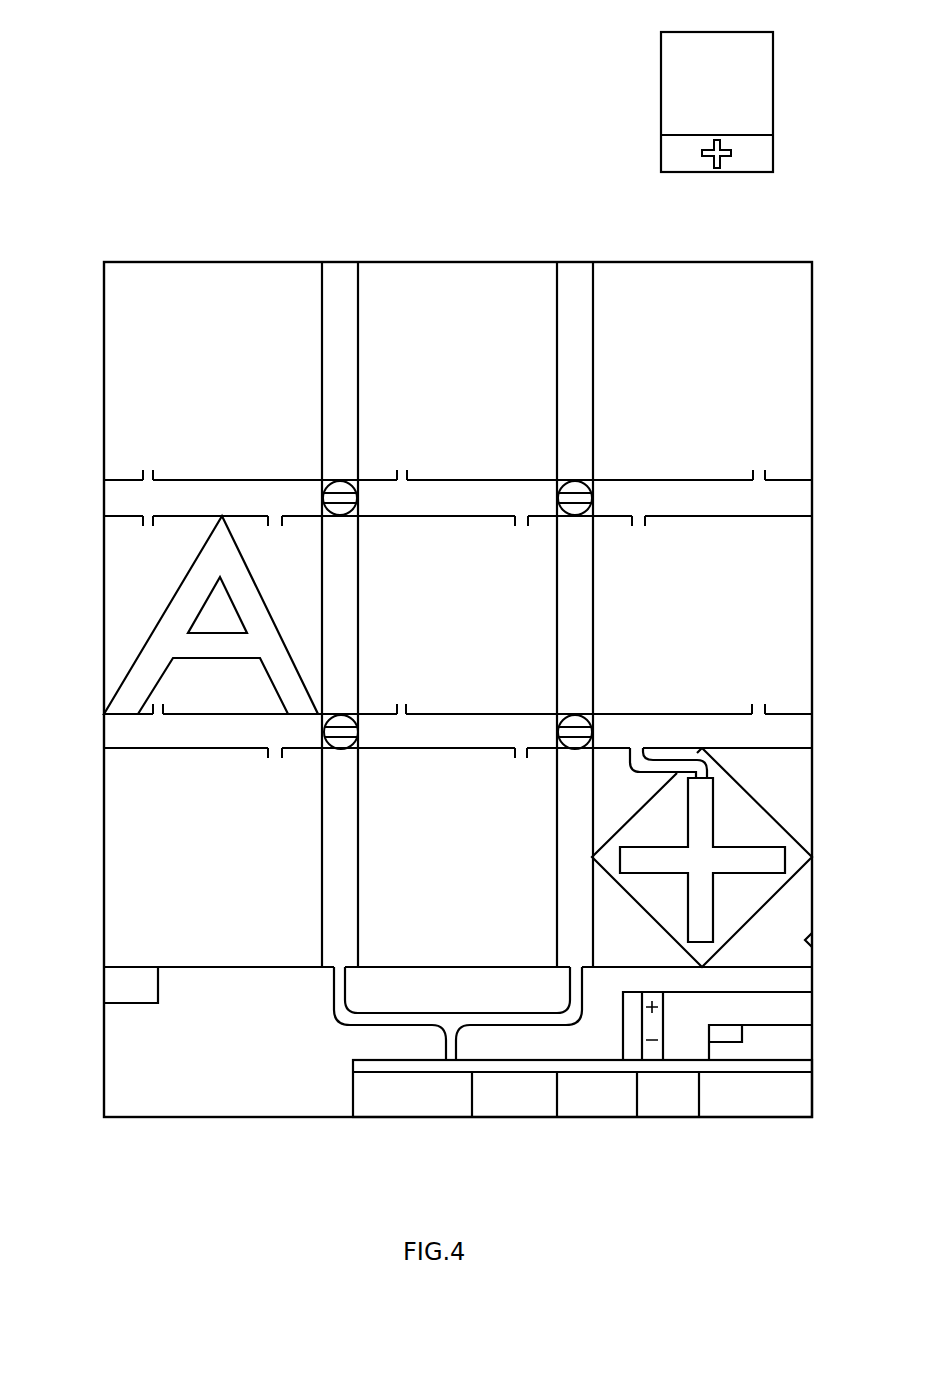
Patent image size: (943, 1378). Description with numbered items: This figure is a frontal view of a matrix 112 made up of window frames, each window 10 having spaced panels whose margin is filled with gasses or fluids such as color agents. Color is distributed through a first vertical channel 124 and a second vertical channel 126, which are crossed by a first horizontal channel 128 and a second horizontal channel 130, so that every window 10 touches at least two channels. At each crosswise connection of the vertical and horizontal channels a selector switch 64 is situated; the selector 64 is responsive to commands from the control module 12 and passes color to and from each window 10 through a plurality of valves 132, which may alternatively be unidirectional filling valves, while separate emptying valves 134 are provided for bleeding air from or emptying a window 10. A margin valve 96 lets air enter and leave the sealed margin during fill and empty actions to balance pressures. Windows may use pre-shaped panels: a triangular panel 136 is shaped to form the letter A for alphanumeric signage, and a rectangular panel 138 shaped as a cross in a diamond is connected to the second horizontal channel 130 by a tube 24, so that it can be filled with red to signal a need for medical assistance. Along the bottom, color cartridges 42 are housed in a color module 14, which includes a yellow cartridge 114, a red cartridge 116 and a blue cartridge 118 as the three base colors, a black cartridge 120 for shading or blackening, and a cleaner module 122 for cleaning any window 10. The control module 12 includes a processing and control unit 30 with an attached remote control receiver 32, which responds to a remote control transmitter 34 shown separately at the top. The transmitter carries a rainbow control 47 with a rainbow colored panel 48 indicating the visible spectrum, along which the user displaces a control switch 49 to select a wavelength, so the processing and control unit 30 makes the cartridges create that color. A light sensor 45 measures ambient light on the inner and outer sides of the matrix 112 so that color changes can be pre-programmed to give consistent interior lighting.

The matrix 112 is at (152, 168).
The second vertical channel 126 is at (341, 272).
The first vertical channel 124 is at (576, 272).
The first horizontal channel 128 is at (137, 497).
The second horizontal channel 130 is at (137, 735).
The valves 132 is at (146, 476).
The emptying valves 134 is at (148, 528).
The selector switch 64 is at (338, 480).
The triangular panel 136 is at (175, 628).
The rectangular panel 138 is at (731, 845).
The tube 24 is at (652, 775).
The margin valve 96 is at (824, 940).
The window 10 is at (783, 785).
The light sensor 45 is at (118, 985).
The color cartridges 42 is at (325, 1133).
The color module 14 is at (830, 1113).
The cleaner module 122 is at (426, 1118).
The black cartridge 120 is at (512, 1118).
The blue cartridge 118 is at (603, 1118).
The red cartridge 116 is at (672, 1118).
The yellow cartridge 114 is at (756, 1118).
The processing and control unit 30 is at (803, 1047).
The control module 12 is at (807, 1017).
The remote control receiver 32 is at (725, 1030).
The remote control transmitter 34 is at (670, 80).
The rainbow control 47 is at (757, 155).
The control switch 49 is at (717, 168).
The rainbow colored panel 48 is at (678, 148).